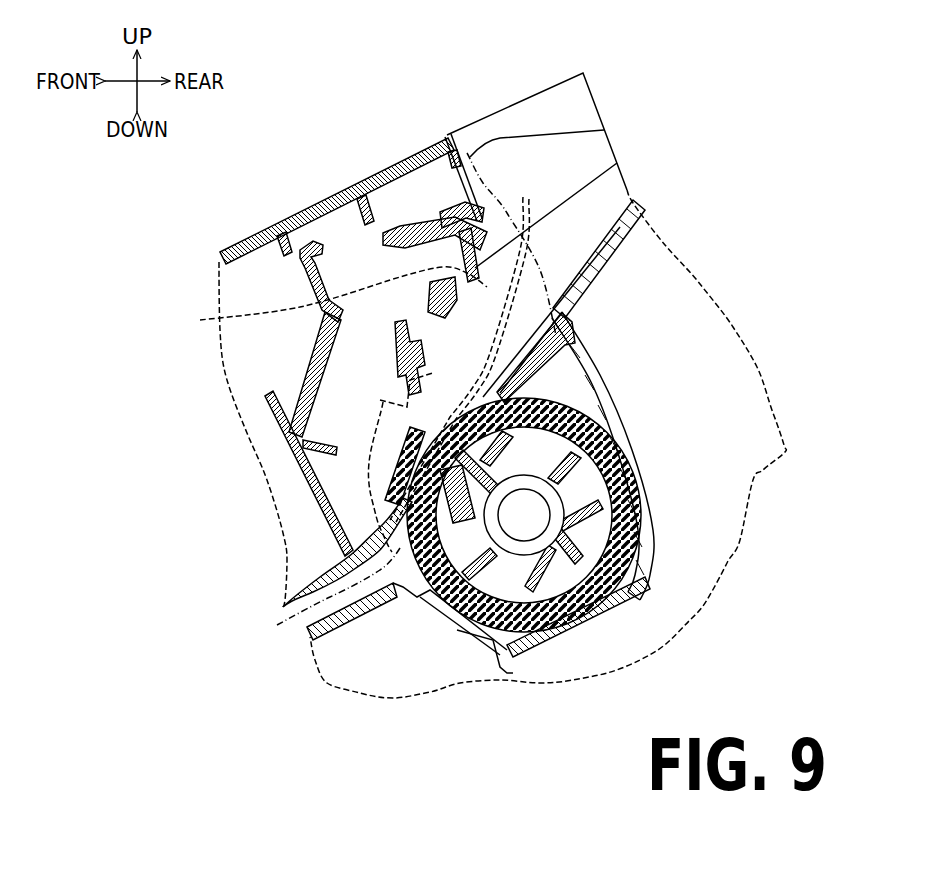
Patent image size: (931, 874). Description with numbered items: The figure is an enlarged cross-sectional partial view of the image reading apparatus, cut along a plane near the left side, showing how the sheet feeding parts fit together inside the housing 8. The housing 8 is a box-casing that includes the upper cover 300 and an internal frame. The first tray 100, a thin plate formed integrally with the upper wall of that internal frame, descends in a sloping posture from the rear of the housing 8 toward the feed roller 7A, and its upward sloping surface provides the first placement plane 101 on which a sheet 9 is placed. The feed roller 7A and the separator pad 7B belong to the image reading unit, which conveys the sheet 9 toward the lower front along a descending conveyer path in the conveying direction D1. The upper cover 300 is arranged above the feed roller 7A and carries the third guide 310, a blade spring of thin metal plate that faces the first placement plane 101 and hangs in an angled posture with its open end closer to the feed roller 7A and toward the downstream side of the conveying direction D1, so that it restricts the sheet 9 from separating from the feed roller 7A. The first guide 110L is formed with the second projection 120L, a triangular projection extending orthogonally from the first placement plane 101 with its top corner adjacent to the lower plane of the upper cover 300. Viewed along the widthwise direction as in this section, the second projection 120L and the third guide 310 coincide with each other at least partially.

The upper cover 300 is at (300, 215).
The sheet 9 is at (470, 152).
The first tray 100 is at (580, 270).
The first guide 110L is at (575, 198).
The conveying direction D1 is at (600, 220).
The first placement plane 101 is at (633, 203).
The housing 8 is at (773, 392).
The second projection 120L is at (313, 303).
The third guide 310 is at (425, 347).
The separator pad 7B is at (407, 460).
The feed roller 7A is at (620, 547).